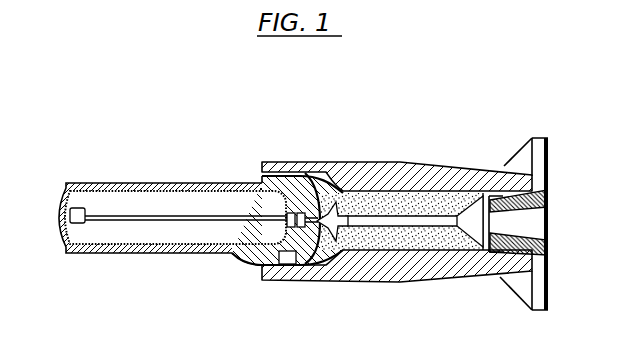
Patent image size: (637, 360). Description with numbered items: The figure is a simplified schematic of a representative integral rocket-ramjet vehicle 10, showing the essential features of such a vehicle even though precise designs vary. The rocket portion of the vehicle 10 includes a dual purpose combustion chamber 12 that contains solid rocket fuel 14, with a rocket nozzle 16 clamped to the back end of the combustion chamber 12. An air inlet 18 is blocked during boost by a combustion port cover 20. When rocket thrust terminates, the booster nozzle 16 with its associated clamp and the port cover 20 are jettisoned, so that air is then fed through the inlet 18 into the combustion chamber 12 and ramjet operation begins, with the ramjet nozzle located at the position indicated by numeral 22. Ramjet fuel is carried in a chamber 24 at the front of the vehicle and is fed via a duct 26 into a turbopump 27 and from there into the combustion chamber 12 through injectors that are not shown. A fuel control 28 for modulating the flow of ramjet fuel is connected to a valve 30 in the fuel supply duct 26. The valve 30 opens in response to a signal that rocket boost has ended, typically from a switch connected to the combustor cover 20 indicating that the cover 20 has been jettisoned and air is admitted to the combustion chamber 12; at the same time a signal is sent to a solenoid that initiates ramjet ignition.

The integral rocket-ramjet vehicle 10 is at (321, 205).
The dual purpose combustion chamber 12 is at (483, 228).
The solid rocket fuel 14 is at (433, 198).
The rocket nozzle 16 is at (537, 205).
The air inlet 18 is at (256, 171).
The combustion port cover 20 is at (343, 172).
The ramjet nozzle 22 is at (515, 278).
The chamber 24 is at (119, 200).
The duct 26 is at (168, 222).
The turbopump 27 is at (250, 244).
The fuel control 28 is at (290, 265).
The valve 30 is at (292, 212).